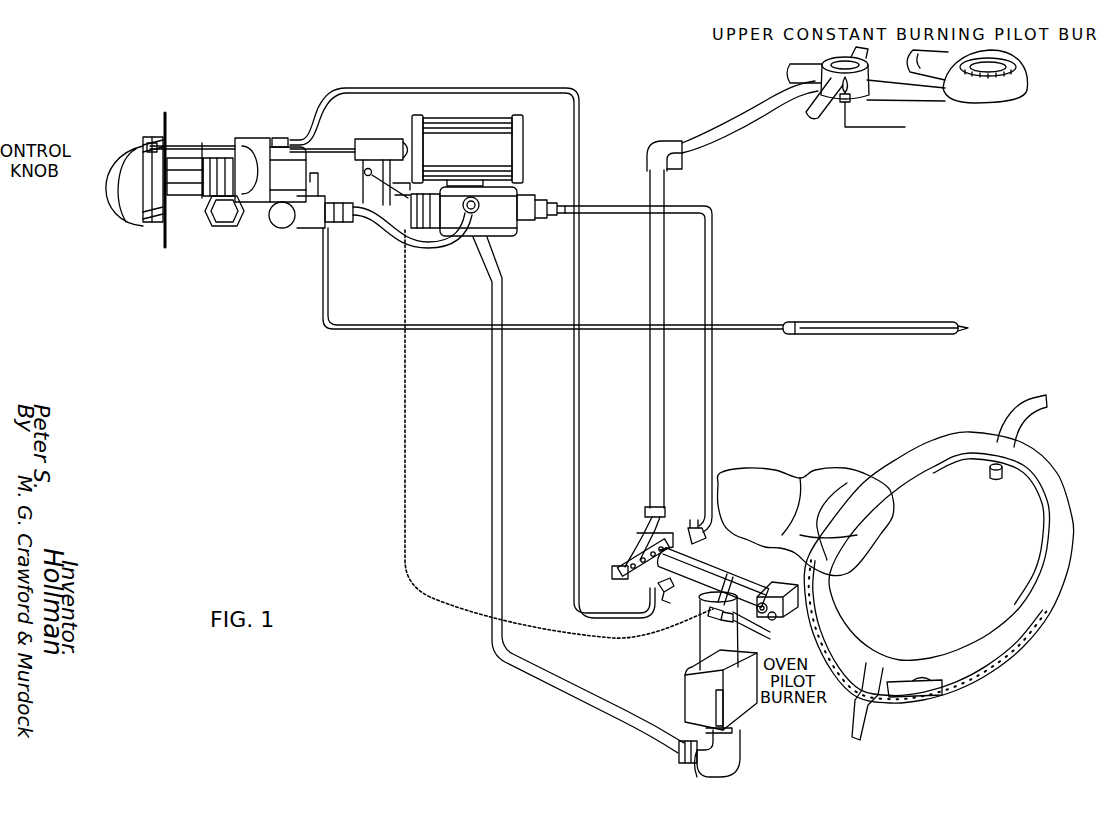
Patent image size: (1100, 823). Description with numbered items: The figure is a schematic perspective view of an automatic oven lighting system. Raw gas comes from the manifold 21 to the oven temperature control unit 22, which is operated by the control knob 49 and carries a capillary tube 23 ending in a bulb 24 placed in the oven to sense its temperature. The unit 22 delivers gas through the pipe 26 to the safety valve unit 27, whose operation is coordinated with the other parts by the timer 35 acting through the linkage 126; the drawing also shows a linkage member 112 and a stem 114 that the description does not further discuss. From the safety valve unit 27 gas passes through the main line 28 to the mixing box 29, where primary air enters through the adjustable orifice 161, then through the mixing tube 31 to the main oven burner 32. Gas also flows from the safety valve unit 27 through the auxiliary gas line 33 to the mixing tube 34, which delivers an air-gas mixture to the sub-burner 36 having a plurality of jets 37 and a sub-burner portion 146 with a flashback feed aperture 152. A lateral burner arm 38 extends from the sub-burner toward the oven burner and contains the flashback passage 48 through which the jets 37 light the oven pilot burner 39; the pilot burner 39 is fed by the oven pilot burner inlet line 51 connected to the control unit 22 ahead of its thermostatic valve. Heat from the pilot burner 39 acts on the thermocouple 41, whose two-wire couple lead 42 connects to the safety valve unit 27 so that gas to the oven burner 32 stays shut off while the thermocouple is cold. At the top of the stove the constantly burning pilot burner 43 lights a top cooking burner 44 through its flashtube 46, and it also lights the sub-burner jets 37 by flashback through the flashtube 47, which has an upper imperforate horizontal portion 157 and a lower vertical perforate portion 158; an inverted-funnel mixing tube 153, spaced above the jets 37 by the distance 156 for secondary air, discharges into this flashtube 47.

The control knob 49 is at (115, 187).
The valve stem 114 is at (183, 150).
The manifold 21 is at (228, 219).
The oven temperature control unit 22 is at (247, 136).
The oven pilot burner inlet line 51 is at (458, 88).
The linkage 126 is at (345, 141).
The linkage member 112 is at (381, 149).
The timer 35 is at (526, 171).
The safety valve unit 27 is at (502, 237).
The pipe 26 is at (383, 225).
The capillary tube 23 is at (748, 325).
The bulb 24 is at (855, 323).
The main line 28 is at (498, 432).
The two-wire couple lead 42 is at (404, 504).
The auxiliary gas line 33 is at (713, 411).
The flashtube 47 is at (646, 141).
The lower perforate portion 158 is at (650, 304).
The upper imperforate portion 157 is at (707, 139).
The constantly burning pilot burner 43 is at (784, 70).
The flashtube 46 is at (821, 108).
The top burner 44 is at (1013, 84).
The main burner 32 is at (948, 704).
The mixing tube 31 is at (763, 490).
The sub-burner 36 is at (617, 534).
The sub-burner portion 146 is at (625, 570).
The mixing tube 153 is at (660, 512).
The spacing distance 156 is at (637, 549).
The jets 37 is at (627, 581).
The flashback feed aperture 152 is at (662, 584).
The mixing tube 34 is at (697, 527).
The lateral burner arm 38 is at (729, 583).
The flashback passage 48 is at (783, 608).
The pilot burner 39 is at (772, 621).
The thermocouple 41 is at (750, 627).
The mixing box 29 is at (682, 684).
The adjustable orifice 161 is at (723, 710).